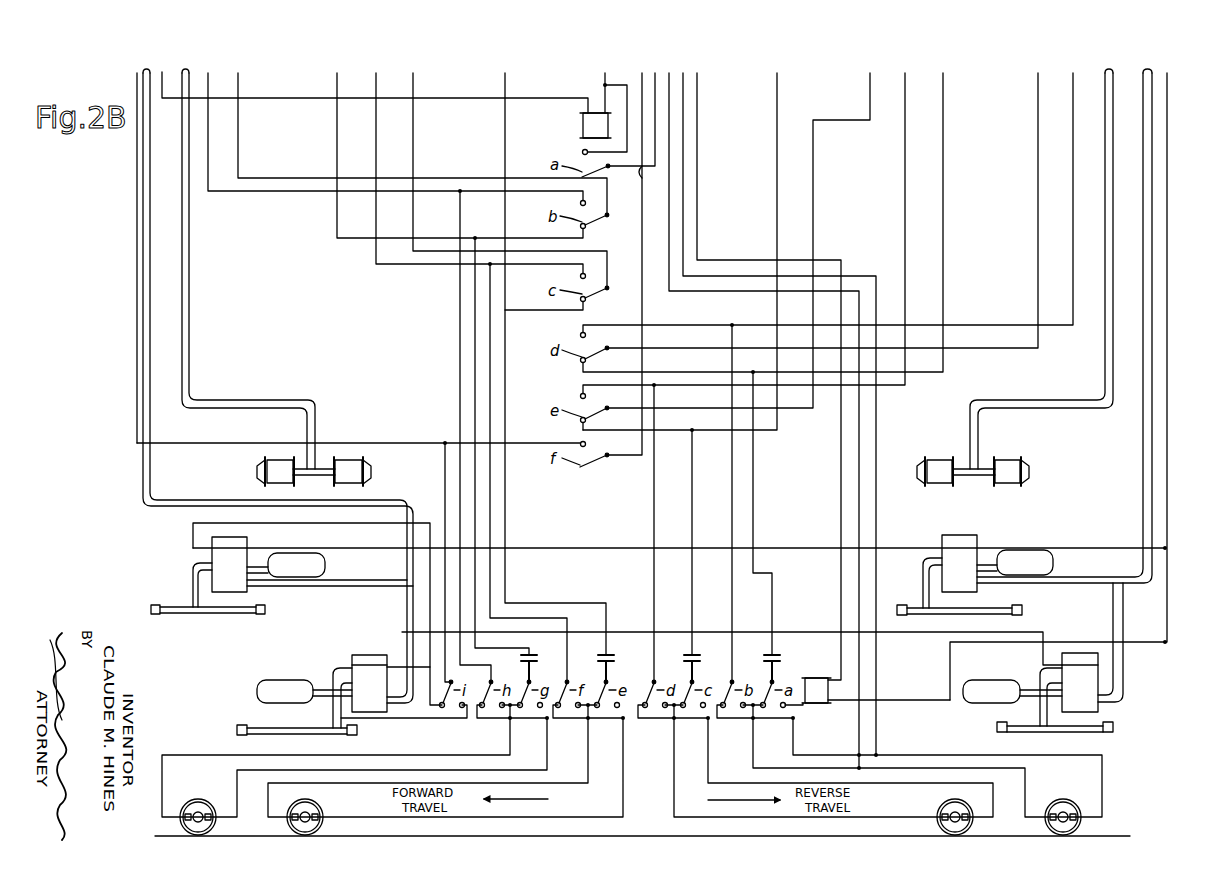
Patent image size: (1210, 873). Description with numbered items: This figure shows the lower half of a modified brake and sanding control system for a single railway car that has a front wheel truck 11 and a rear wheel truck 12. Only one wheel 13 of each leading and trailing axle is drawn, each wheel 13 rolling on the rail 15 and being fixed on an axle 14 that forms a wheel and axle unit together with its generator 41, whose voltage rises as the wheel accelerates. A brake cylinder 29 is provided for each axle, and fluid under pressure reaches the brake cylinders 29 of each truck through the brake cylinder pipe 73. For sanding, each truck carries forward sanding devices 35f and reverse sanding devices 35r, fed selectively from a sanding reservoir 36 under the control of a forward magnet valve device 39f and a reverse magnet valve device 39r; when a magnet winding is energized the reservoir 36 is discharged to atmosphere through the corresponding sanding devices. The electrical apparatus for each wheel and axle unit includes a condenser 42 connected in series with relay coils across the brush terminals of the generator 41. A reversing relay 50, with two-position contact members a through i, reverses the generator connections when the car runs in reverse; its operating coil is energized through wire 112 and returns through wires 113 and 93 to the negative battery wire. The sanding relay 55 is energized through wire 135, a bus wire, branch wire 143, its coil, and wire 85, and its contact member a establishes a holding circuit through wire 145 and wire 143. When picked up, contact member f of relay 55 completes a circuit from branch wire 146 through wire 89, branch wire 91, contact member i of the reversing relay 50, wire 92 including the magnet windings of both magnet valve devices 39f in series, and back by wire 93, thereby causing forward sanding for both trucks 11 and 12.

The branch wire 85 is at (447, 101).
The branch wire 143 is at (605, 74).
The wire 145 is at (603, 83).
The branch wire 146 is at (625, 84).
The sanding relay 55 is at (580, 125).
The wire 135 is at (640, 168).
The wire 112 is at (699, 92).
The brake cylinder pipe 73 is at (237, 405).
The wire 89 is at (387, 445).
The branch wire 91 is at (444, 462).
The brake cylinder 29 is at (332, 480).
The wire 92 is at (339, 522).
The forward sanding magnet valve device 39f is at (209, 555).
The sanding reservoir 36 is at (326, 566).
The forward sanding device 35f is at (151, 605).
The reverse sanding magnet valve device 39r is at (388, 643).
The reverse sanding device 35r is at (243, 724).
The branch wire 93 is at (421, 719).
The electrical condenser 42 is at (547, 654).
The reversing relay 50 is at (816, 706).
The wire 113 is at (924, 701).
The front wheel truck 11 is at (258, 807).
The rear wheel truck 12 is at (1017, 807).
The axle 14 is at (200, 814).
The generator 41 is at (190, 826).
The wheel 13 is at (212, 826).
The rail 15 is at (655, 829).